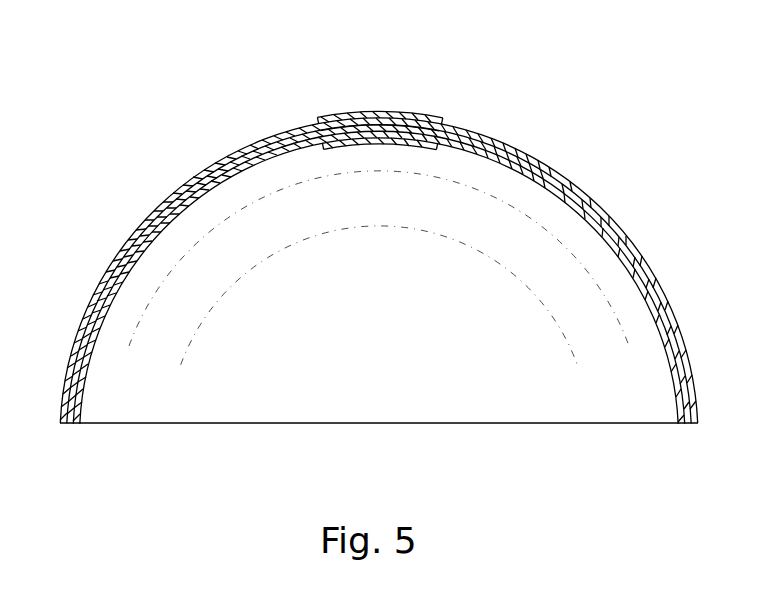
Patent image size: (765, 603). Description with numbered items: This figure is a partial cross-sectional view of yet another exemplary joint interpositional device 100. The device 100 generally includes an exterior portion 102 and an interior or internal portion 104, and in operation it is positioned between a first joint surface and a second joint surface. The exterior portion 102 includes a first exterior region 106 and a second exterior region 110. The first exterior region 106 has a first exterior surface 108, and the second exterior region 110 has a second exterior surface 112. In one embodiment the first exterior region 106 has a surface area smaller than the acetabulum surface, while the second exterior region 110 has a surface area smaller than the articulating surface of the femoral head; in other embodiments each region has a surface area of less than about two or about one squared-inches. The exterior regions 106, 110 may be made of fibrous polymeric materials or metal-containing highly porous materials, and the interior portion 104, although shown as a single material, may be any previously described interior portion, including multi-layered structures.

The joint interpositional device 100 is at (605, 103).
The exterior portion 102 is at (286, 117).
The interior portion 104 is at (164, 240).
The first exterior region 106 is at (412, 117).
The first exterior surface 108 is at (349, 112).
The second exterior region 110 is at (393, 144).
The second exterior surface 112 is at (358, 147).